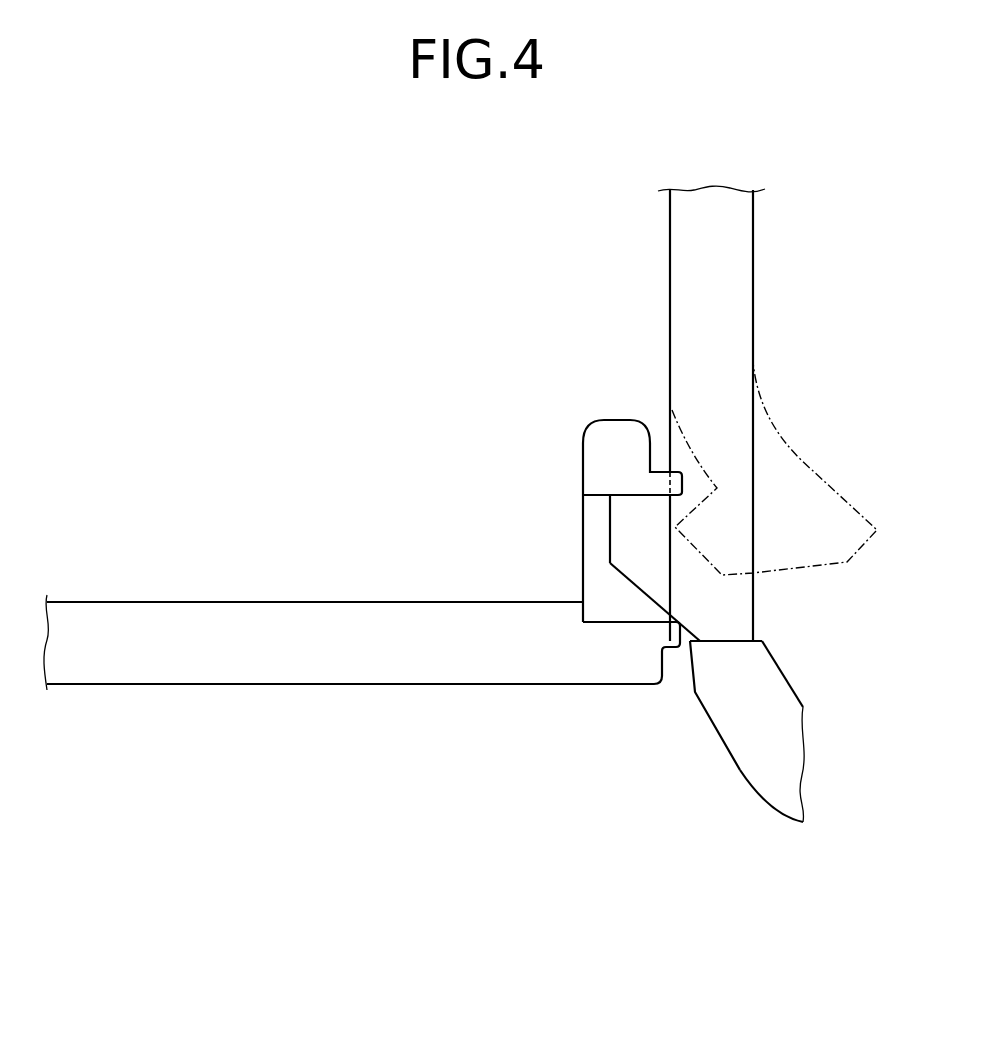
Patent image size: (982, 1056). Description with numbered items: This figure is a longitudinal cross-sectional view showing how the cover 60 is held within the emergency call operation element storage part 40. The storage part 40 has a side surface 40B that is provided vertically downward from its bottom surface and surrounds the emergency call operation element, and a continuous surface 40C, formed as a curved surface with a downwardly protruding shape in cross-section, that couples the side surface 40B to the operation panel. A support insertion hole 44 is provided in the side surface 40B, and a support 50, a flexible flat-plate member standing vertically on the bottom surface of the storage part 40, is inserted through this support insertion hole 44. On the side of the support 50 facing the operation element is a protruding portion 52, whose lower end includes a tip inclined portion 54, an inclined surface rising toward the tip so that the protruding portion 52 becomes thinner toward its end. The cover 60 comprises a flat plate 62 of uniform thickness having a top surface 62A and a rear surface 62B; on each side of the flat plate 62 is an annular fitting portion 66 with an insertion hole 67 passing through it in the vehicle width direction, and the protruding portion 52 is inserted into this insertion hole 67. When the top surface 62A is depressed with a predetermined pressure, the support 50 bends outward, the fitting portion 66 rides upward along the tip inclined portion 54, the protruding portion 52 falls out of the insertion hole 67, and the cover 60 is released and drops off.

The emergency call operation element storage part 40 is at (761, 777).
The side surface 40B is at (693, 668).
The continuous surface 40C is at (742, 767).
The support insertion hole 44 is at (758, 639).
The support 50 is at (690, 335).
The protruding portion 52 is at (622, 527).
The tip inclined portion 54 is at (643, 597).
The cover 60 is at (372, 625).
The flat plate 62 is at (362, 668).
The top surface 62A is at (405, 686).
The rear surface 62B is at (310, 602).
The fitting portion 66 is at (605, 485).
The insertion hole 67 is at (658, 497).